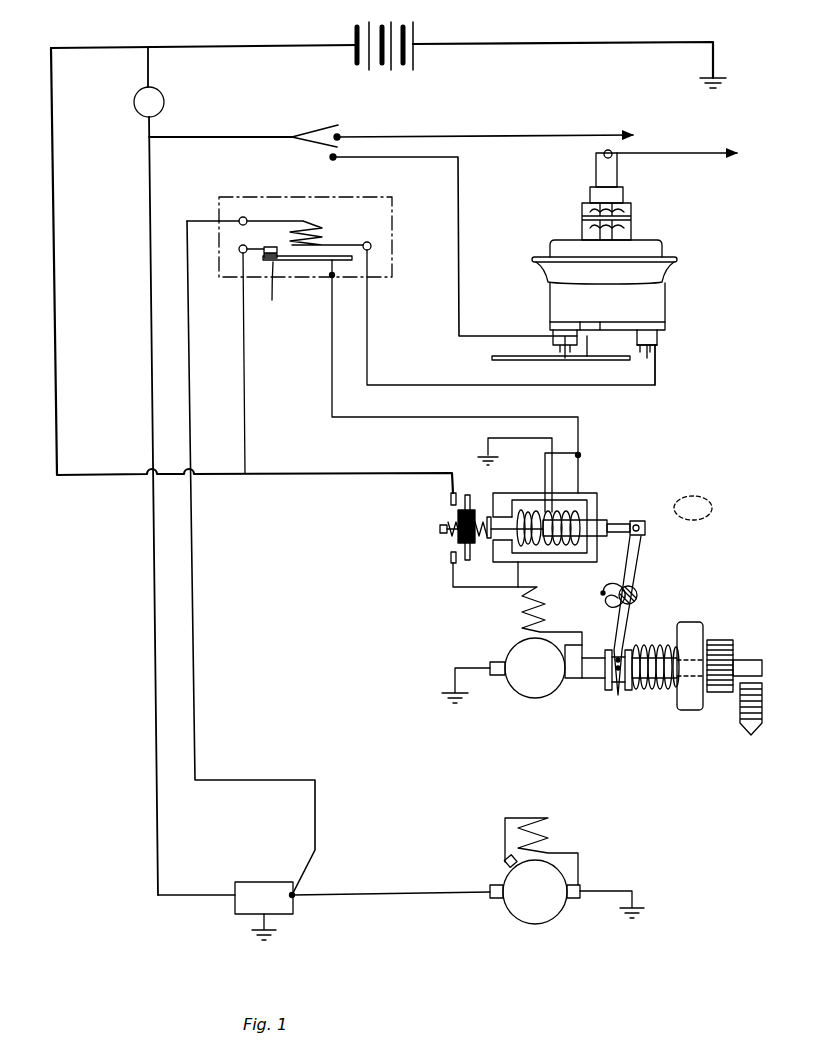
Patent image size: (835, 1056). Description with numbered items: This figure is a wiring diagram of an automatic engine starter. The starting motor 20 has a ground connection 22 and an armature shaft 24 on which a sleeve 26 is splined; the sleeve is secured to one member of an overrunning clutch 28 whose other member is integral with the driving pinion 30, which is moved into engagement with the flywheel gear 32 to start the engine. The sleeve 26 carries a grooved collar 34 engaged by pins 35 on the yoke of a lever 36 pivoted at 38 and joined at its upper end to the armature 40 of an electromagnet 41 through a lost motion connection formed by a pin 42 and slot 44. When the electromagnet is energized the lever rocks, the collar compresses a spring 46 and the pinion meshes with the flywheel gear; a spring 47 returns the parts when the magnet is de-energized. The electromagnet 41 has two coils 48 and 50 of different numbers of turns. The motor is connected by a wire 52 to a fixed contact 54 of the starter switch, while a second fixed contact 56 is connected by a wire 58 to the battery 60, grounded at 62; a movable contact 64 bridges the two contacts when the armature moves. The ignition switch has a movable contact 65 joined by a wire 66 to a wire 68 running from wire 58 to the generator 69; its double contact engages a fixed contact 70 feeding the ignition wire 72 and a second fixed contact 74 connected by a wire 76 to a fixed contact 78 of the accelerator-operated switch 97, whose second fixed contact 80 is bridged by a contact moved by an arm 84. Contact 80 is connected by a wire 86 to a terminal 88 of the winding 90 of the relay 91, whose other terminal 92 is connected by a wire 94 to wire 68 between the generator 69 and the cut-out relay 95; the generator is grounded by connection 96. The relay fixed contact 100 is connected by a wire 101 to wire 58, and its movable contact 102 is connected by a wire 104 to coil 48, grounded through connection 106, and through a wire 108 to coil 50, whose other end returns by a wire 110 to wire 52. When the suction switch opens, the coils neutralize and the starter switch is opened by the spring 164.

The starting motor 20 is at (550, 692).
The ground connection 22 is at (460, 700).
The armature shaft 24 is at (594, 673).
The sleeve 26 is at (658, 683).
The overrunning clutch 28 is at (690, 628).
The driving pinion 30 is at (722, 695).
The flywheel gear 32 is at (751, 725).
The grooved collar 34 is at (610, 648).
The pins 35 is at (620, 693).
The lever 36 is at (632, 632).
The pivot 38 is at (637, 593).
The armature 40 is at (598, 520).
The electromagnet 41 is at (585, 493).
The pin 42 is at (641, 513).
The slot 44 is at (645, 528).
The spring 46 is at (643, 687).
The spring 47 is at (636, 615).
The coil 48 is at (565, 547).
The coil 50 is at (537, 537).
The wire 52 is at (480, 587).
The fixed contact 54 is at (448, 557).
The fixed contact 56 is at (445, 500).
The wire 58 is at (195, 47).
The battery 60 is at (383, 27).
The ground 62 is at (720, 86).
The movable contact 64 is at (472, 502).
The movable contact 65 is at (340, 122).
The wire 66 is at (230, 135).
The wire 68 is at (148, 75).
The generator 69 is at (535, 906).
The fixed contact 70 is at (343, 130).
The wire 72 is at (422, 135).
The fixed contact 74 is at (334, 161).
The wire 76 is at (459, 222).
The fixed contact 78 is at (548, 338).
The fixed contact 80 is at (663, 336).
The arm 84 is at (577, 362).
The wire 86 is at (415, 385).
The terminal 88 is at (371, 244).
The winding 90 is at (330, 231).
The relay 91 is at (292, 197).
The terminal 92 is at (243, 217).
The wire 94 is at (195, 613).
The cut-out relay 95 is at (255, 880).
The ground connection 96 is at (640, 915).
The switch 97 is at (557, 308).
The fixed contact 100 is at (271, 247).
The wire 101 is at (245, 385).
The movable contact 102 is at (304, 288).
The wire 104 is at (332, 375).
The ground connection 106 is at (512, 442).
The wire 108 is at (568, 455).
The wire 110 is at (515, 570).
The spring 164 is at (457, 543).